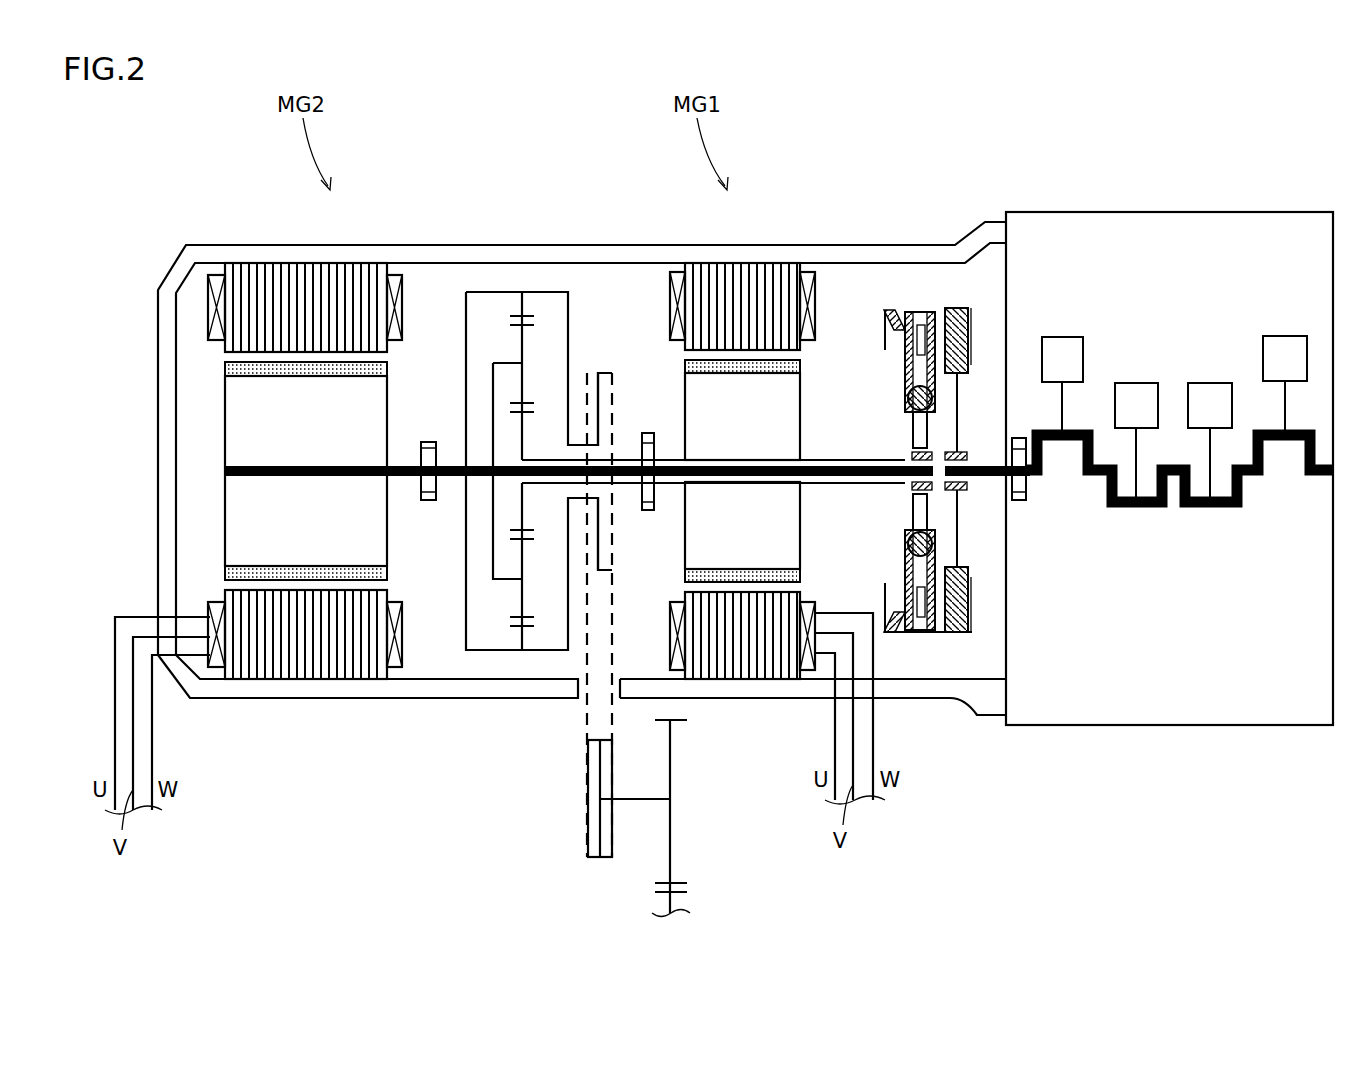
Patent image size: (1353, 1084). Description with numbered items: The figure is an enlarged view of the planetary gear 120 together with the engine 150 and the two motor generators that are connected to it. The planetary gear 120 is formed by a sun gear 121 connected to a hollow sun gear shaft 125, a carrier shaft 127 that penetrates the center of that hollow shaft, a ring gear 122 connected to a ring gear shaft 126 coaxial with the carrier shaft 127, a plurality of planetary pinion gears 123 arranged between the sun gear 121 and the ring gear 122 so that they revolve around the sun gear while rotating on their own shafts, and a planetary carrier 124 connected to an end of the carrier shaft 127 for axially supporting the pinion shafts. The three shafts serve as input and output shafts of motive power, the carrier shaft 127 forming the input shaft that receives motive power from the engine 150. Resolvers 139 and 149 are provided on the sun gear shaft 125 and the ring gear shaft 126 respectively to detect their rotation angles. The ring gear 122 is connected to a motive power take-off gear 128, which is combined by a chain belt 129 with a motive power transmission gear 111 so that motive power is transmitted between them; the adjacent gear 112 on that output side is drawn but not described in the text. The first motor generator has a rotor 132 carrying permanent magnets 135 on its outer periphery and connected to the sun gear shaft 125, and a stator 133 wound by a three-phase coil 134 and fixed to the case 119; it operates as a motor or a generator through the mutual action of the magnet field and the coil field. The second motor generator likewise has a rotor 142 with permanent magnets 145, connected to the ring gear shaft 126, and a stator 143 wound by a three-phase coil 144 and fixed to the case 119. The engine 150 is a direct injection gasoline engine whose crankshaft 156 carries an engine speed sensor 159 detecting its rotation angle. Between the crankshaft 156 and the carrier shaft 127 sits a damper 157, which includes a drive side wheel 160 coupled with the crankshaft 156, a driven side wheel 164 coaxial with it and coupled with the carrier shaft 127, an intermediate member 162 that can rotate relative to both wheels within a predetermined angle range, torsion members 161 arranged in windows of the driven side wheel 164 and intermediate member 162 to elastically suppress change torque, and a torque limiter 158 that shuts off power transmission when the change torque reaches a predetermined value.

The motive power transmission gear 111 is at (575, 823).
The counter gear 112 is at (642, 799).
The case 119 is at (168, 268).
The planetary gear 120 is at (659, 371).
The sun gear 121 is at (522, 433).
The ring gear 122 is at (528, 310).
The planetary pinion gears 123 is at (493, 363).
The planetary carrier 124 is at (467, 365).
The sun gear shaft 125 is at (625, 460).
The ring gear shaft 126 is at (418, 440).
The carrier shaft 127 is at (875, 462).
The motive power take-off gear 128 is at (600, 373).
The chain belt 129 is at (585, 726).
The rotor 132 is at (803, 392).
The stator 133 is at (762, 275).
The three-phase coil 134 is at (808, 272).
The permanent magnets 135 is at (803, 367).
The resolver 139 is at (648, 433).
The rotor 142 is at (226, 437).
The stator 143 is at (283, 270).
The three-phase coil 144 is at (214, 272).
The permanent magnets 145 is at (226, 369).
The resolver 149 is at (428, 500).
The engine 150 is at (1160, 212).
The crankshaft 156 is at (1007, 474).
The damper 157 is at (910, 312).
The torque limiter 158 is at (902, 630).
The engine speed sensor 159 is at (1022, 440).
The drive side wheel 160 is at (957, 630).
The torsion members 161 is at (935, 544).
The intermediate member 162 is at (888, 310).
The driven side wheel 164 is at (933, 427).